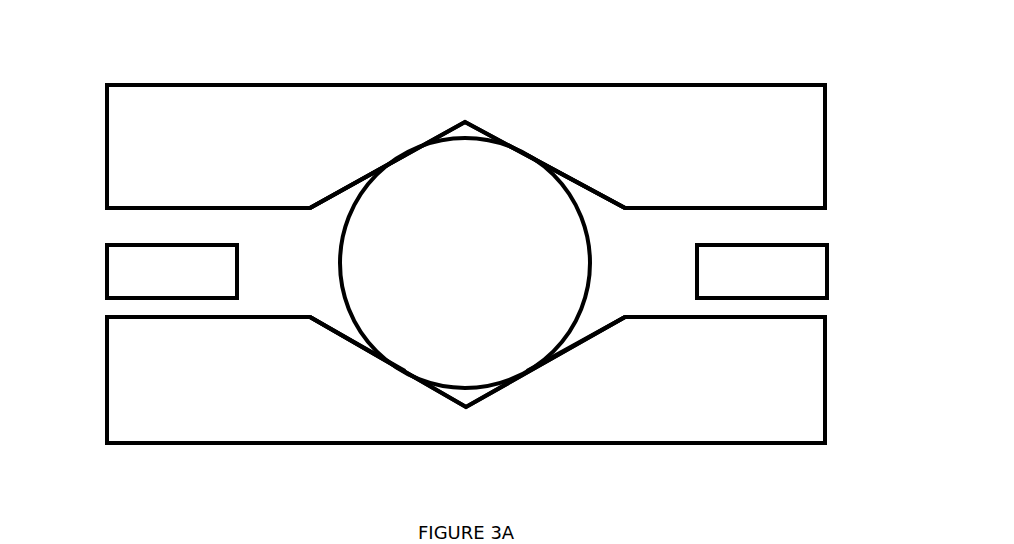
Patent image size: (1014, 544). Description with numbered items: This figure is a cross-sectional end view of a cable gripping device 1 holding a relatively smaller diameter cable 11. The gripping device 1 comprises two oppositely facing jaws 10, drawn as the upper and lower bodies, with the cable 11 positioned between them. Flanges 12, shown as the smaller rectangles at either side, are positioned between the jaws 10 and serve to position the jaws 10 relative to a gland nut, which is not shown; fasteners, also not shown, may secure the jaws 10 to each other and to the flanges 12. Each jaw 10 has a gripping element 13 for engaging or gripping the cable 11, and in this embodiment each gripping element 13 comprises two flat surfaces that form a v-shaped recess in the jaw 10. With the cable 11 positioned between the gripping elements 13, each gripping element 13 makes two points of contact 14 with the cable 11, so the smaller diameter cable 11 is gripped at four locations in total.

The gripping device 1 is at (236, 59).
The jaw 10 is at (700, 105).
The cable 11 is at (510, 183).
The flange 12 is at (135, 271).
The gripping element 13 is at (470, 122).
The point of contact 14 is at (402, 155).